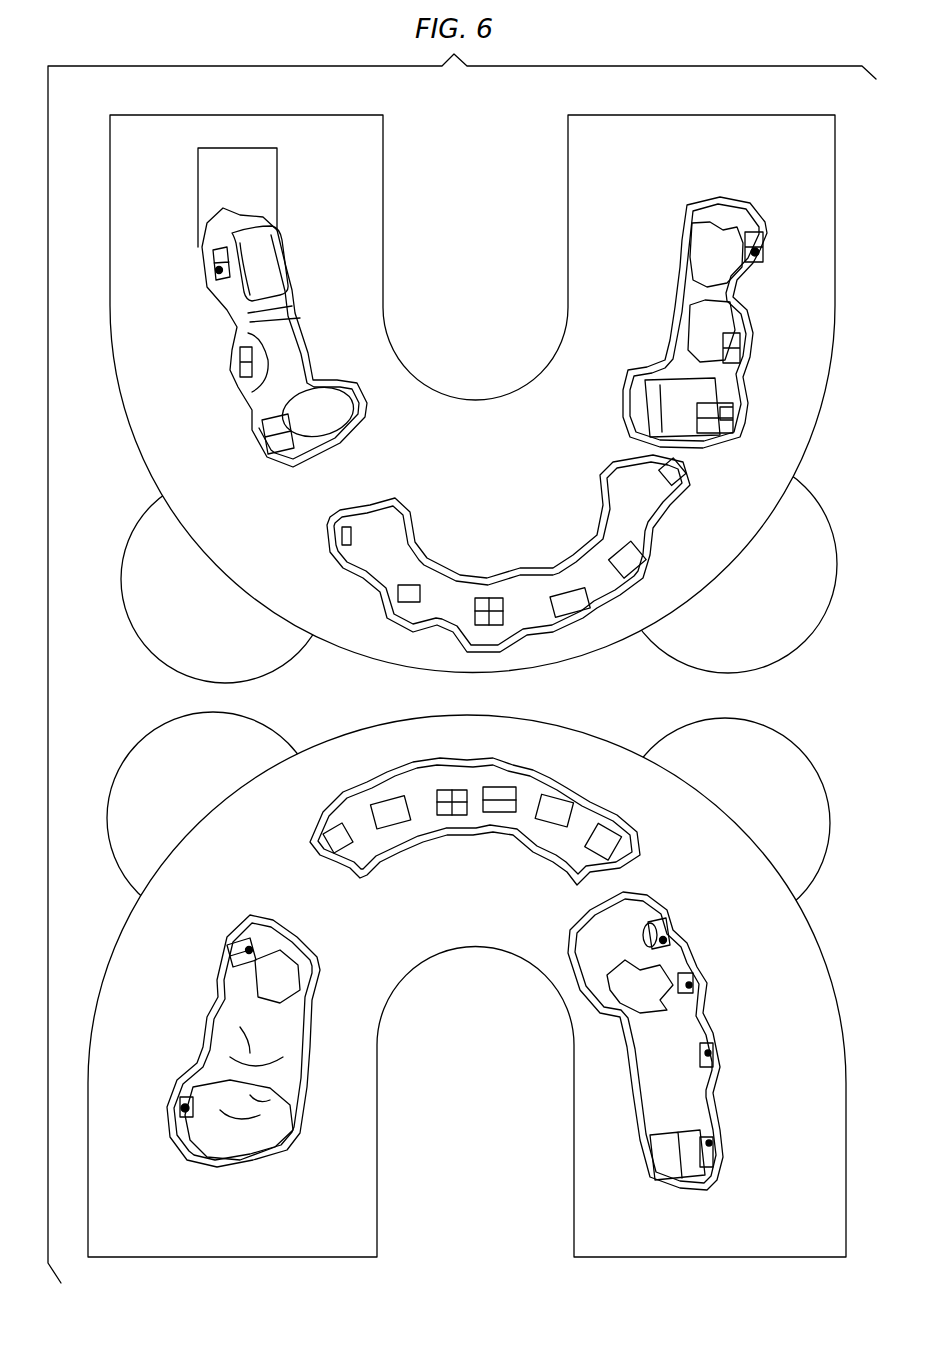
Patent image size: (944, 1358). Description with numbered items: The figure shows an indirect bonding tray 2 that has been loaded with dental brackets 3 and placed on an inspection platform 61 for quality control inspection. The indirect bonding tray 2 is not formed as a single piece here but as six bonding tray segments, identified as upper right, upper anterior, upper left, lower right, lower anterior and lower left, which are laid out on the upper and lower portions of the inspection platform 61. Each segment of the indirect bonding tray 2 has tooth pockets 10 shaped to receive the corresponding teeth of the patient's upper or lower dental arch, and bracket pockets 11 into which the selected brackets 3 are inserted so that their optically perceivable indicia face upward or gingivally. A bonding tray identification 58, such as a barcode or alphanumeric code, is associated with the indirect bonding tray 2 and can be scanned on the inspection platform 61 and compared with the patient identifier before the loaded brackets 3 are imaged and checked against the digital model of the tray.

The inspection platform 61 is at (152, 157).
The bonding tray identification 58 is at (237, 197).
The indirect bonding tray 2 is at (595, 1095).
The tooth pocket 10 is at (703, 243).
The bracket pocket 11 is at (749, 240).
The bracket 3 is at (757, 253).